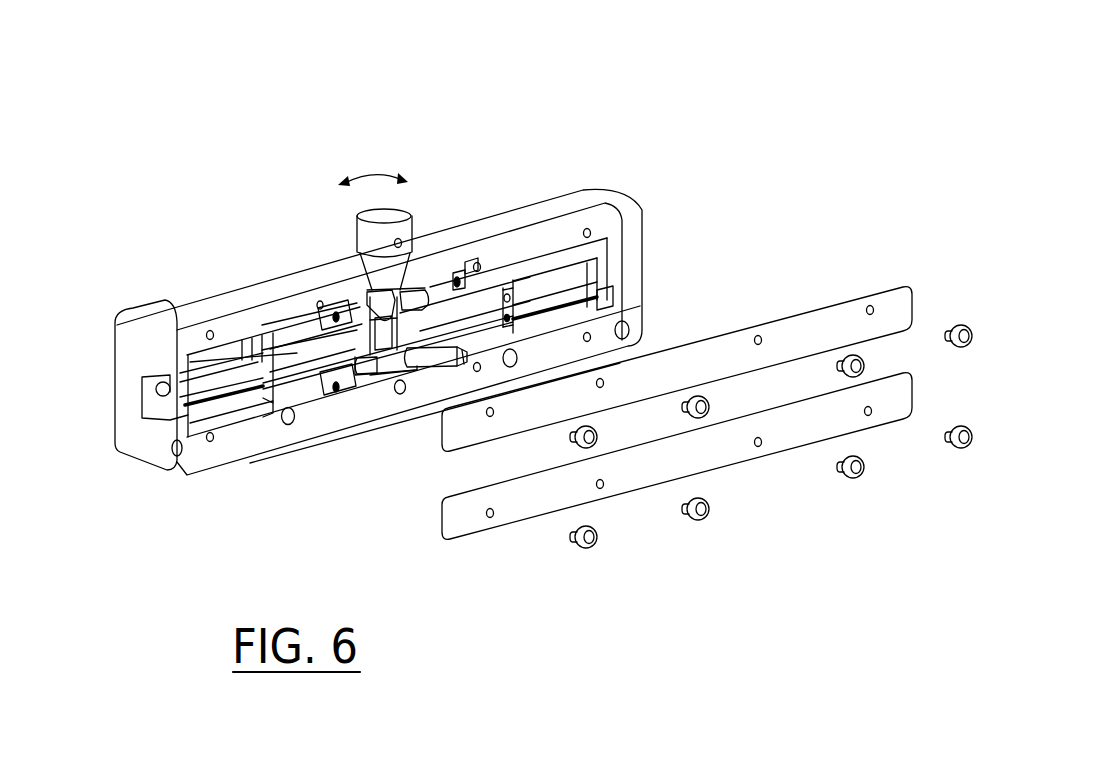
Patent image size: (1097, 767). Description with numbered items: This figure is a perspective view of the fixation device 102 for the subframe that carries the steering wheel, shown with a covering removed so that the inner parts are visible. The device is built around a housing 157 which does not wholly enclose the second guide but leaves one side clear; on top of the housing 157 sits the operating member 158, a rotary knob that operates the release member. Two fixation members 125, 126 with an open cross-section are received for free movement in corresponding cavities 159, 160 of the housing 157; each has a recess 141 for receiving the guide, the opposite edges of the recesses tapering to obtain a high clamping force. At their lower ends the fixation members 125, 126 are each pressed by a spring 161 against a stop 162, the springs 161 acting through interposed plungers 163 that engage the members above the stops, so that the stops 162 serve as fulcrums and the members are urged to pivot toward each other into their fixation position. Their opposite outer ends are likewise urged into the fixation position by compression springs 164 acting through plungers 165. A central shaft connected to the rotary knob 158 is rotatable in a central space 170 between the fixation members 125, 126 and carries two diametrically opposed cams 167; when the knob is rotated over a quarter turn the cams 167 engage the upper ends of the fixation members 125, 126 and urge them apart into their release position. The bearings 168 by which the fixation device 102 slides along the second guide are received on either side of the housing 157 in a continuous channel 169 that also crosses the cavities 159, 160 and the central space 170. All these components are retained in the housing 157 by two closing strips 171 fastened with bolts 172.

The fixation device 102 is at (763, 186).
The fixation member 125 is at (352, 317).
The fixation member 126 is at (455, 282).
The recess 141 is at (565, 262).
The housing 157 is at (247, 275).
The operating member 158 is at (418, 205).
The cavity 159 is at (377, 305).
The cavity 160 is at (423, 380).
The spring 161 is at (612, 306).
The stop 162 is at (383, 380).
The plunger 163 is at (460, 368).
The compression spring 164 is at (480, 262).
The plunger 165 is at (445, 280).
The cam 167 is at (405, 290).
The bearing 168 is at (600, 245).
The continuous channel 169 is at (293, 355).
The central space 170 is at (362, 375).
The closing strip 171 is at (824, 322).
The bolt 172 is at (687, 425).